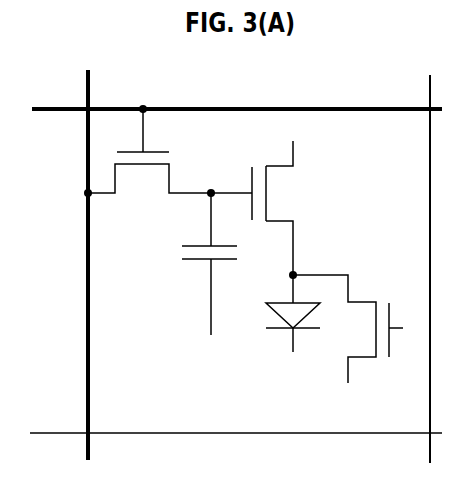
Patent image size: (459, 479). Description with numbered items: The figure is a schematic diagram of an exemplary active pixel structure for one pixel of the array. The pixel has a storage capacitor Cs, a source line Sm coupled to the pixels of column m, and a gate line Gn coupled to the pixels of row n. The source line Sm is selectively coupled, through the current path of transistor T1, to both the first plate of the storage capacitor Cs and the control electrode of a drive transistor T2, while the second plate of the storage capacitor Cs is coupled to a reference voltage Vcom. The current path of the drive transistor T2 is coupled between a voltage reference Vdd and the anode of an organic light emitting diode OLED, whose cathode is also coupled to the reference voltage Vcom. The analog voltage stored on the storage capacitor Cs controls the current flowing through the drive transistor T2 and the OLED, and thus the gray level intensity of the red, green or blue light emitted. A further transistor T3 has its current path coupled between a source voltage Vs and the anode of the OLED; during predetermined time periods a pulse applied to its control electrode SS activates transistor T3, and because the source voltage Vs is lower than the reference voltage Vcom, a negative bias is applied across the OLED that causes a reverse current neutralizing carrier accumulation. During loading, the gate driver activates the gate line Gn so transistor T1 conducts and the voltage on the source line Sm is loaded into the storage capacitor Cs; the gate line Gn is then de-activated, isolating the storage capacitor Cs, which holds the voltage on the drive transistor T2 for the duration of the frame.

The source line Sm is at (67, 252).
The gate line Gn is at (221, 114).
The transistor T1 is at (149, 151).
The drive transistor T2 is at (253, 208).
The transistor T3 is at (348, 329).
The storage capacitor Cs is at (206, 264).
The organic light emitting diode device OLED is at (276, 311).
The voltage reference Vdd is at (330, 143).
The reference voltage Vcom is at (249, 366).
The source voltage Vs is at (370, 385).
The control electrode SS is at (403, 315).